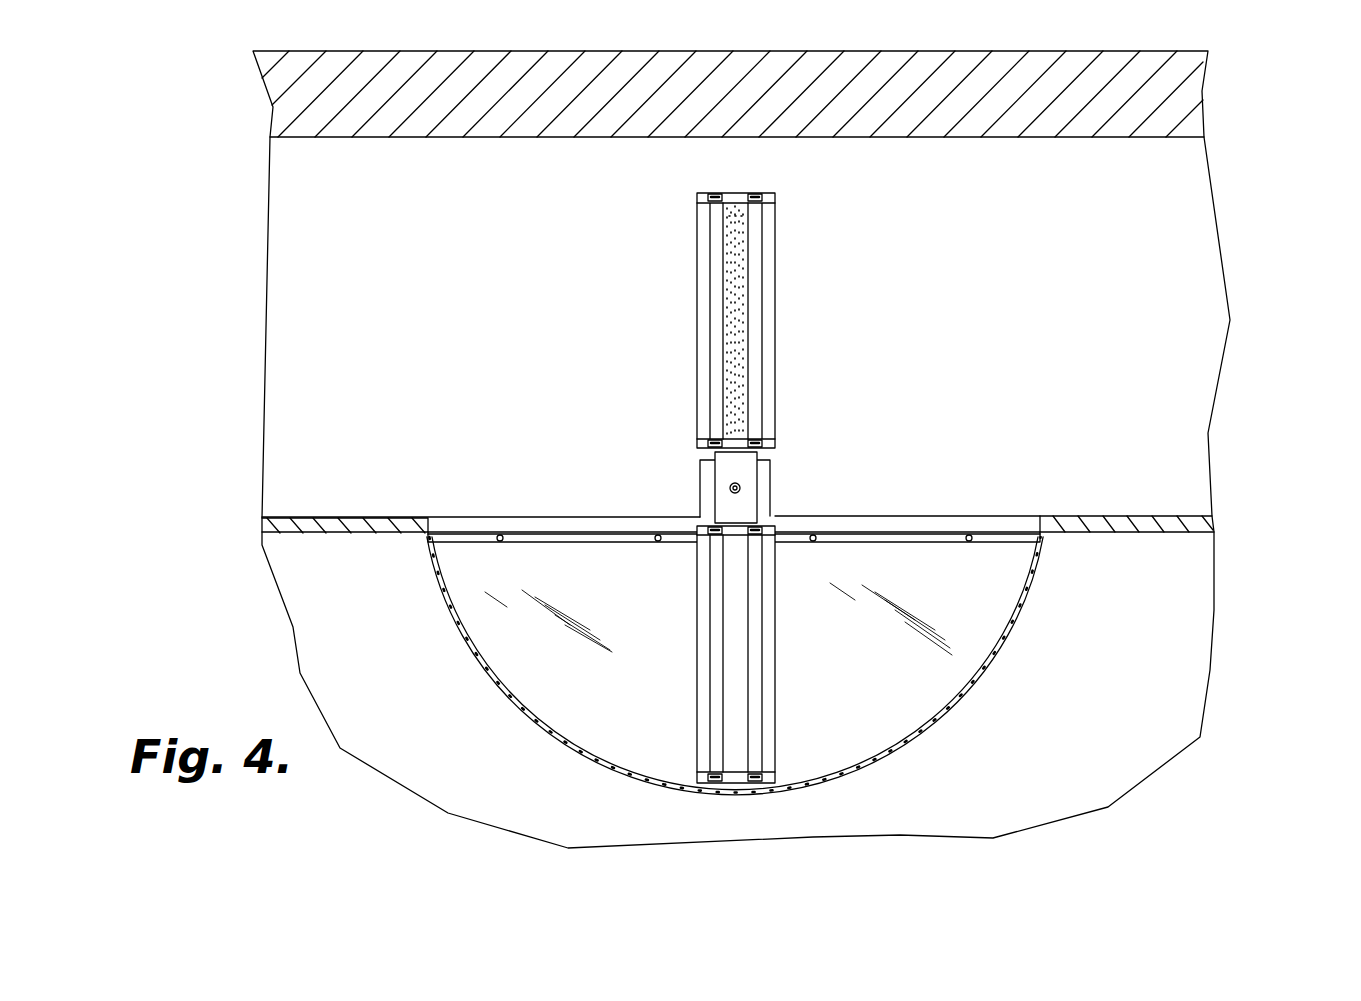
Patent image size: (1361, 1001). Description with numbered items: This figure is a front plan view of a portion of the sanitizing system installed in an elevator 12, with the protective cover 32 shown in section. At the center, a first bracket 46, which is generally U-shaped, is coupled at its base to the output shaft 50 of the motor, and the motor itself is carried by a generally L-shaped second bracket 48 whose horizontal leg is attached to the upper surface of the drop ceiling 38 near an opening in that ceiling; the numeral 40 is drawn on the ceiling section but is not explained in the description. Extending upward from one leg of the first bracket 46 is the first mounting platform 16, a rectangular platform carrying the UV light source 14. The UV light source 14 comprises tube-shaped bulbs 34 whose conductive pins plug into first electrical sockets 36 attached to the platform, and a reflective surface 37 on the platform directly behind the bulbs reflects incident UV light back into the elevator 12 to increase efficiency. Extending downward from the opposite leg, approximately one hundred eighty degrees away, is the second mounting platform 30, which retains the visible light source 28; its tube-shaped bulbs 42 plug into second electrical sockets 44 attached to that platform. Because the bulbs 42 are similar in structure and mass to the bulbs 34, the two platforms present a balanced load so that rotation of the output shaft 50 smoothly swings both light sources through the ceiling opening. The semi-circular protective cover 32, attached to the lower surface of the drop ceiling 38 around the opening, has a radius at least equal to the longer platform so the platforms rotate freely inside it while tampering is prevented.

The elevator 12 is at (1232, 175).
The UV light source 14 is at (686, 299).
The first mounting platform 16 is at (772, 352).
The visible light source 28 is at (758, 678).
The second mounting platform 30 is at (768, 724).
The protective cover 32 is at (997, 660).
The UV light source bulbs 34 is at (718, 262).
The first electrical socket 36 is at (758, 193).
The reflective surface 37 is at (738, 296).
The drop ceiling 38 is at (1120, 518).
The left ceiling section 40 is at (455, 528).
The visible light source bulbs 42 is at (752, 688).
The second electrical socket 44 is at (752, 535).
The first bracket 46 is at (750, 471).
The second bracket 48 is at (708, 485).
The output shaft 50 is at (742, 490).